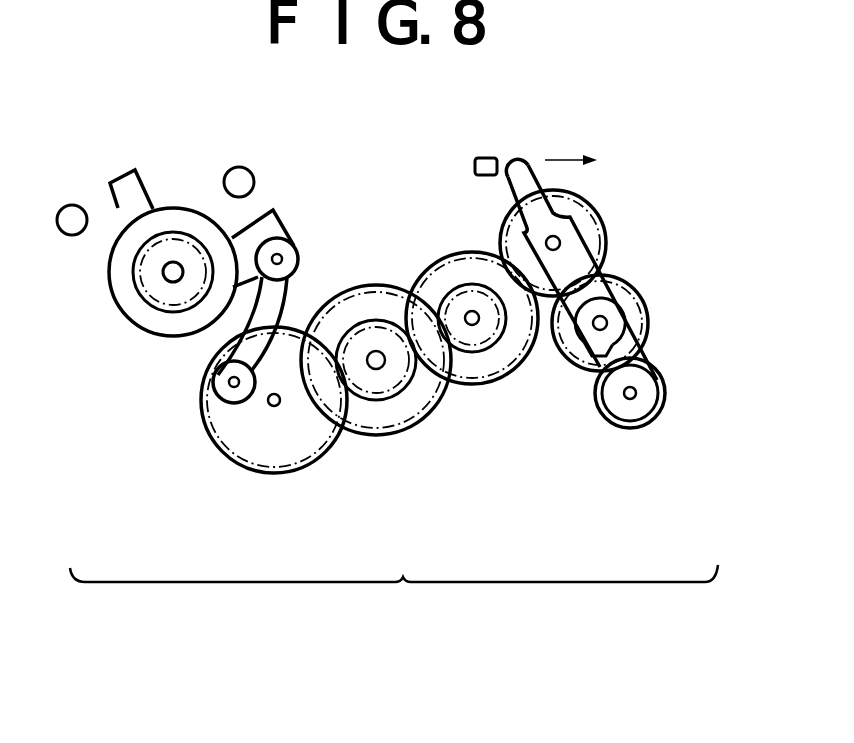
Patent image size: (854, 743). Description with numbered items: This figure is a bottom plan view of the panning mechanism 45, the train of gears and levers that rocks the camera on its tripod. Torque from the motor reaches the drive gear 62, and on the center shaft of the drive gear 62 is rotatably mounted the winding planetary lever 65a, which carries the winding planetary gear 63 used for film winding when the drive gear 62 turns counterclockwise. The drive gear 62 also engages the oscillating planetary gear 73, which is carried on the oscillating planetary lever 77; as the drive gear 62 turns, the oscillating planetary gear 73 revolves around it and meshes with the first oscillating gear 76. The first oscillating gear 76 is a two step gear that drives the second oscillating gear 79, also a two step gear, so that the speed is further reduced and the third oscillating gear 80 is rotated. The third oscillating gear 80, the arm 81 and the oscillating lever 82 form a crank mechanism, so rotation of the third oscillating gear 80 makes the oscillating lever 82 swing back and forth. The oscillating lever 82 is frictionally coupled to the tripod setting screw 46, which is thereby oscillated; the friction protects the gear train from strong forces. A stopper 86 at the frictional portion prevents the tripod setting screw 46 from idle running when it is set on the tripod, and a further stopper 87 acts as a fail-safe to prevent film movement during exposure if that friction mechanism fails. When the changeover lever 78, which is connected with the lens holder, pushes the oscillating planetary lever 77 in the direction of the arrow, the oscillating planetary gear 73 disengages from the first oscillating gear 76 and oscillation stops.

The panning mechanism 45 is at (394, 598).
The tripod setting screw 46 is at (128, 302).
The drive gear 62 is at (637, 300).
The winding planetary gear 63 is at (622, 427).
The winding planetary lever 65a is at (643, 383).
The oscillating planetary gear 73 is at (505, 233).
The first oscillating gear 76 is at (430, 258).
The oscillating planetary lever 77 is at (523, 173).
The changeover lever 78 is at (483, 158).
The second oscillating gear 79 is at (387, 423).
The third oscillating gear 80 is at (227, 460).
The arm 81 is at (245, 356).
The oscillating lever 82 is at (273, 223).
The stopper 86 is at (72, 205).
The stopper 87 is at (570, 345).